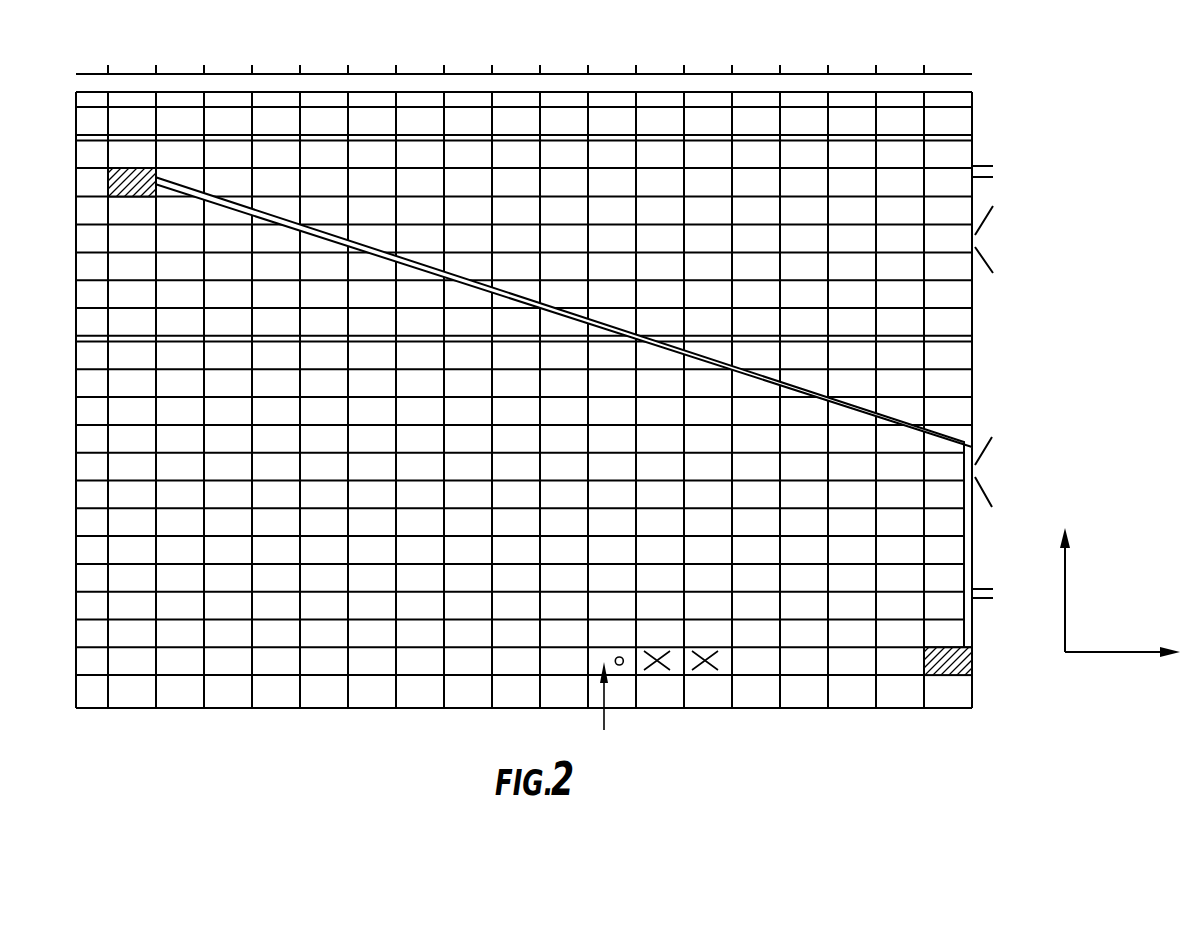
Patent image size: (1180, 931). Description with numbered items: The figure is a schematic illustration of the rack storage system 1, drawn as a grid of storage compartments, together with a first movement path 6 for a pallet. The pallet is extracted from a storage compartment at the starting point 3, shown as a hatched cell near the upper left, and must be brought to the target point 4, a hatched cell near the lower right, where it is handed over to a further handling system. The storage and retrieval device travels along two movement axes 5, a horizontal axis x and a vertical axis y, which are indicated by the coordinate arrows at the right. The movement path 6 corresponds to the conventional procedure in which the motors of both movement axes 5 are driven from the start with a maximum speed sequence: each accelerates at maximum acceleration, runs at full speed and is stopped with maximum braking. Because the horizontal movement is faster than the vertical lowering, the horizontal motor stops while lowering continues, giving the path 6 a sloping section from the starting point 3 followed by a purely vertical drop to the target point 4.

The rack storage system 1 is at (1066, 130).
The starting point 3 is at (135, 169).
The target point 4 is at (943, 668).
The movement axes 5 is at (1131, 577).
The movement path 6 is at (512, 294).